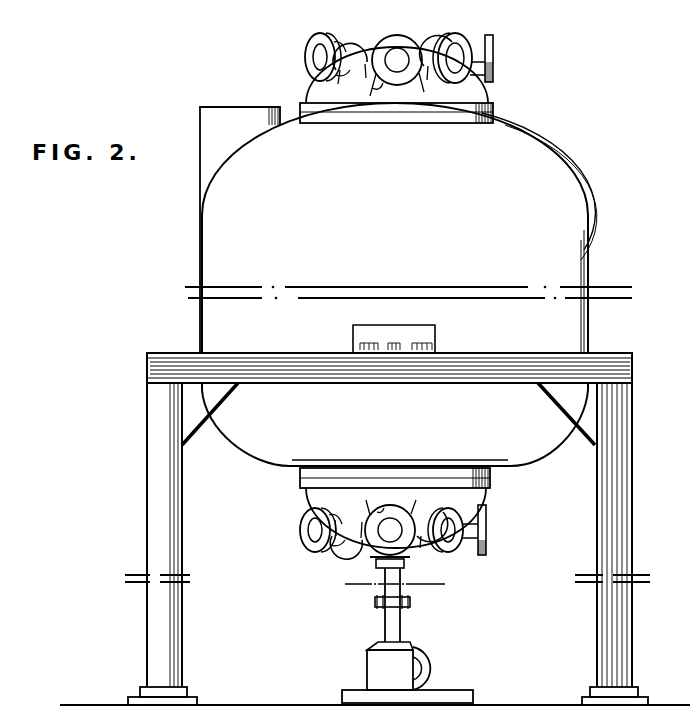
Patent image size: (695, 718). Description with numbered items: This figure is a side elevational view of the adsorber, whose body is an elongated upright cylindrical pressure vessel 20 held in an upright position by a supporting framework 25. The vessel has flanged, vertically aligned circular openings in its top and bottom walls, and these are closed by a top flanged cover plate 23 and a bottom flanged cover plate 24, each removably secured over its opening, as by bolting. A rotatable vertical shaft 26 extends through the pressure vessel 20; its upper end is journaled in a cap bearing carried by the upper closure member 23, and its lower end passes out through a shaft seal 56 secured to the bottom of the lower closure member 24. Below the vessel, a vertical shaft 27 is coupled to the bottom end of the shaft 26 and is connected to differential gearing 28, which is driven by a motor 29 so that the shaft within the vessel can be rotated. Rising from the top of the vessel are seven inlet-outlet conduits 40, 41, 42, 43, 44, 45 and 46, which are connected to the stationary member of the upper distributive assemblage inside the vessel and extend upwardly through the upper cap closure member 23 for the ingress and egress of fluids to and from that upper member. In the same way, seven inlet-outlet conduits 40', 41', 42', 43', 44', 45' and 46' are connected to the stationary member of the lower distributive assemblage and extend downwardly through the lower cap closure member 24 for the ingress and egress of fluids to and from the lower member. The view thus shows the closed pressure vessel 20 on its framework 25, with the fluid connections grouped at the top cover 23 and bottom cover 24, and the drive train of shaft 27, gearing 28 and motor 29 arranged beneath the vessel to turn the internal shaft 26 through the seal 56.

The pressure vessel 20 is at (594, 258).
The top flanged cover plate 23 is at (482, 93).
The bottom flanged cover plate 24 is at (466, 500).
The framework 25 is at (636, 505).
The rotatable vertical shaft 26 is at (418, 577).
The vertical shaft 27 is at (405, 629).
The differential gearing 28 is at (367, 672).
The motor 29 is at (437, 668).
The inlet-outlet conduit 40 is at (509, 58).
The inlet-outlet conduit 41 is at (438, 47).
The inlet-outlet conduit 42 is at (397, 51).
The inlet-outlet conduit 43 is at (352, 49).
The inlet-outlet conduit 44 is at (327, 45).
The inlet-outlet conduit 45 is at (364, 93).
The inlet-outlet conduit 46 is at (462, 47).
The inlet-outlet conduit 40' is at (503, 530).
The inlet-outlet conduit 41' is at (444, 546).
The inlet-outlet conduit 42' is at (381, 523).
The inlet-outlet conduit 43' is at (324, 552).
The inlet-outlet conduit 44' is at (314, 520).
The inlet-outlet conduit 45' is at (395, 500).
The inlet-outlet conduit 46' is at (450, 520).
The shaft seal 56 is at (372, 561).